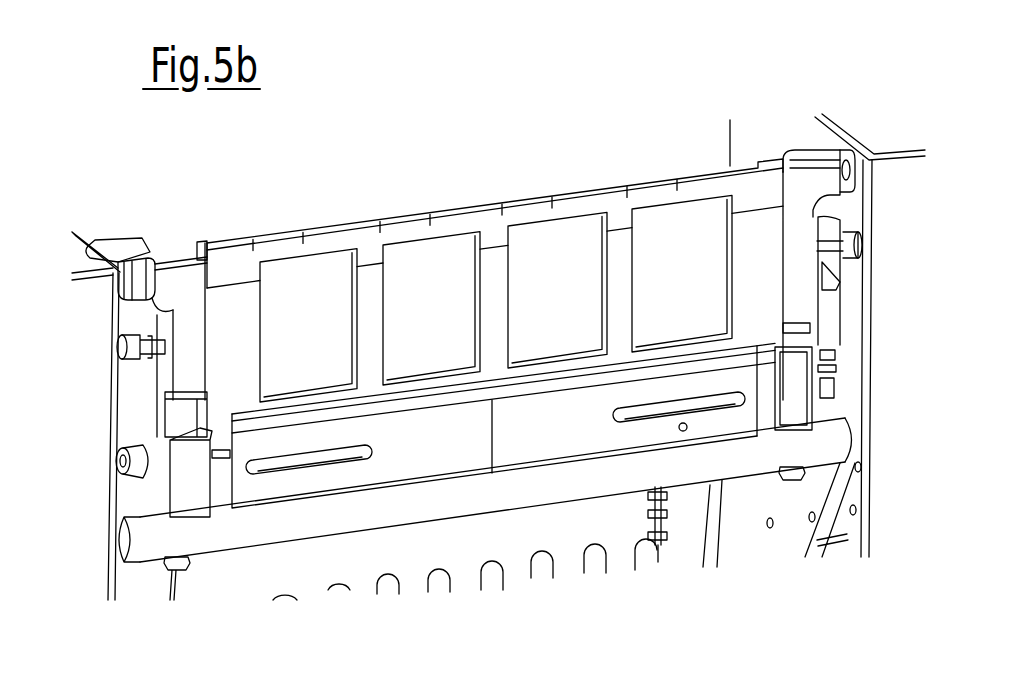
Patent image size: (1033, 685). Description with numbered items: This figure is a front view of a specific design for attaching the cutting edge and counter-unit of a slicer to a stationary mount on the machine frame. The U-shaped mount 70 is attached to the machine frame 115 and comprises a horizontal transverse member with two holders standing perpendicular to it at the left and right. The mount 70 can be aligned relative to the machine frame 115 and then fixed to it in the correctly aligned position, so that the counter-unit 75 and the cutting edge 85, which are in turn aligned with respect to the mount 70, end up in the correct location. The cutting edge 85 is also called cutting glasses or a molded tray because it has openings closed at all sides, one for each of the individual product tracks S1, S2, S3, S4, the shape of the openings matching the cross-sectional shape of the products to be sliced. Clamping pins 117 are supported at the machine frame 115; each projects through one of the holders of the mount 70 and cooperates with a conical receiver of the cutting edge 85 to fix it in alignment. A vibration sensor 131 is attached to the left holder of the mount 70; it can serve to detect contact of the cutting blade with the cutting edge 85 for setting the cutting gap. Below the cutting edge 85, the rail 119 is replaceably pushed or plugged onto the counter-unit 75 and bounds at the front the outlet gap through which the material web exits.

The U-shaped mount 70 is at (183, 300).
The counter-unit 75 is at (467, 455).
The cutting edge 85 is at (287, 226).
The machine frame 115 is at (872, 360).
The clamping pins 117 is at (158, 347).
The rail 119 is at (545, 387).
The vibration sensor 131 is at (133, 257).
The track S1 is at (332, 346).
The track S2 is at (455, 327).
The track S3 is at (575, 310).
The track S4 is at (700, 290).